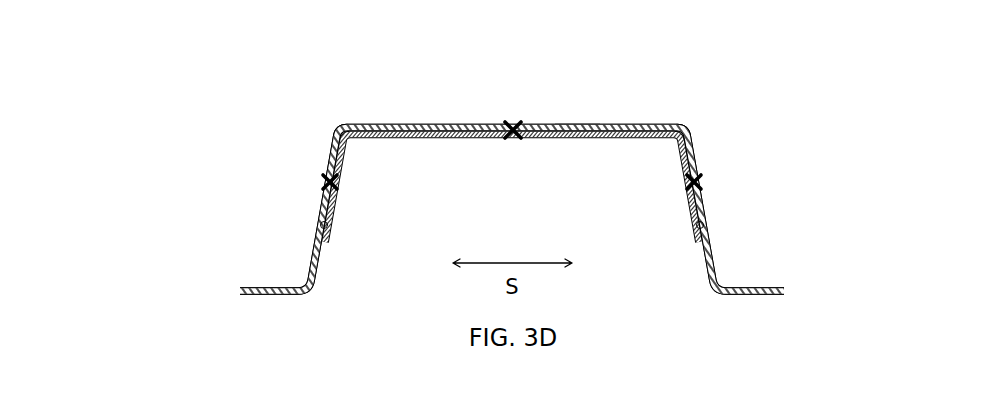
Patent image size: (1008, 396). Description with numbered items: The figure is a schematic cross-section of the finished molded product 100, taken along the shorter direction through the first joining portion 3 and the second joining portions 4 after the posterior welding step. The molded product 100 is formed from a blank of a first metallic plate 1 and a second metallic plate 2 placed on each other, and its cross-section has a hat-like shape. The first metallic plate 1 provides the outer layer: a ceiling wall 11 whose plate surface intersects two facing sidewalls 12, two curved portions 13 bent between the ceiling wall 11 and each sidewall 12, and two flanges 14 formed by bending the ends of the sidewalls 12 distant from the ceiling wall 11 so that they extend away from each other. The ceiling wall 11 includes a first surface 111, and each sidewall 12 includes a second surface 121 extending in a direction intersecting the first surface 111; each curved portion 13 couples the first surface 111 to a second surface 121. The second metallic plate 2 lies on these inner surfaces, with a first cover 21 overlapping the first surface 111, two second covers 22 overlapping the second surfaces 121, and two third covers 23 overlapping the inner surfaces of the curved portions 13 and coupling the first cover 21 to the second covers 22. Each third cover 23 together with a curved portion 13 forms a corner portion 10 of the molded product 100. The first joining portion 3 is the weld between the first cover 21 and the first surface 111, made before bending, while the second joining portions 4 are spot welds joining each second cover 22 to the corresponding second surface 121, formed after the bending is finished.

The first metallic plate 1 is at (281, 296).
The second metallic plate 2 is at (334, 230).
The first joining portion 3 is at (512, 115).
The second joining portion 4 is at (319, 182).
The corner portion 10 is at (343, 117).
The ceiling wall 11 is at (542, 122).
The sidewall 12 is at (318, 203).
The curved portion 13 is at (339, 127).
The flange 14 is at (262, 288).
The first cover 21 is at (455, 140).
The second cover 22 is at (338, 207).
The third cover 23 is at (352, 141).
The molded product 100 is at (804, 90).
The first surface 111 is at (570, 135).
The second surface 121 is at (322, 226).